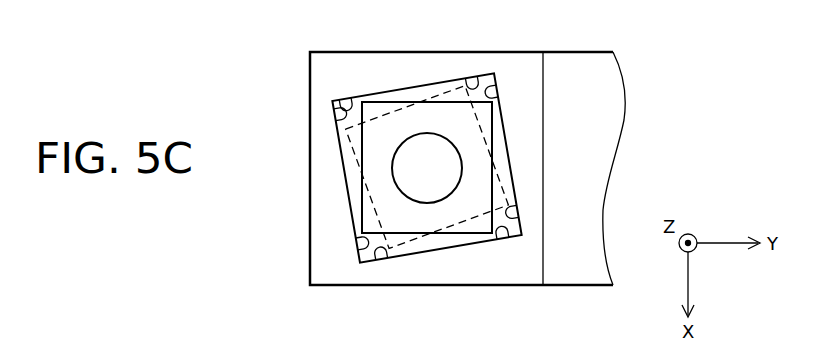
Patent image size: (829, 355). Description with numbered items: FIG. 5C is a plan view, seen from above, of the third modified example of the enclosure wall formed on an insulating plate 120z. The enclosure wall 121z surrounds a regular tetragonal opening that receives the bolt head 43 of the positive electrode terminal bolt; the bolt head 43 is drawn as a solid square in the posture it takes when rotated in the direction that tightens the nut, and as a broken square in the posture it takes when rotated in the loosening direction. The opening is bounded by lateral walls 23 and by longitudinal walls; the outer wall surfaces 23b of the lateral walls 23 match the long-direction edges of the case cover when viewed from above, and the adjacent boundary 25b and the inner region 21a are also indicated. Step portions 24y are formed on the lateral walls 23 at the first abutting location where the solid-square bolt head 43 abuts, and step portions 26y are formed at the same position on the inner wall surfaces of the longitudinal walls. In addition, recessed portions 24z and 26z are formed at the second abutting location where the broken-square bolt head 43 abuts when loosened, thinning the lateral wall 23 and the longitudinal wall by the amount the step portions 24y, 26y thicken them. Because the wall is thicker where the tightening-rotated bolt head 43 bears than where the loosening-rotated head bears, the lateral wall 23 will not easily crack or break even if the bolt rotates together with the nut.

The lateral wall 23 is at (507, 52).
The outer wall surface 23b is at (461, 173).
The insulating plate 120z is at (610, 70).
The enclosure wall 121z is at (293, 89).
The boundary line 25b is at (309, 169).
The lens holder 21a is at (494, 170).
The bolt head 43 is at (449, 247).
The step portion 24y is at (341, 100).
The recessed portion 24z is at (480, 73).
The step portion 26y is at (362, 251).
The recessed portion 26z is at (347, 115).